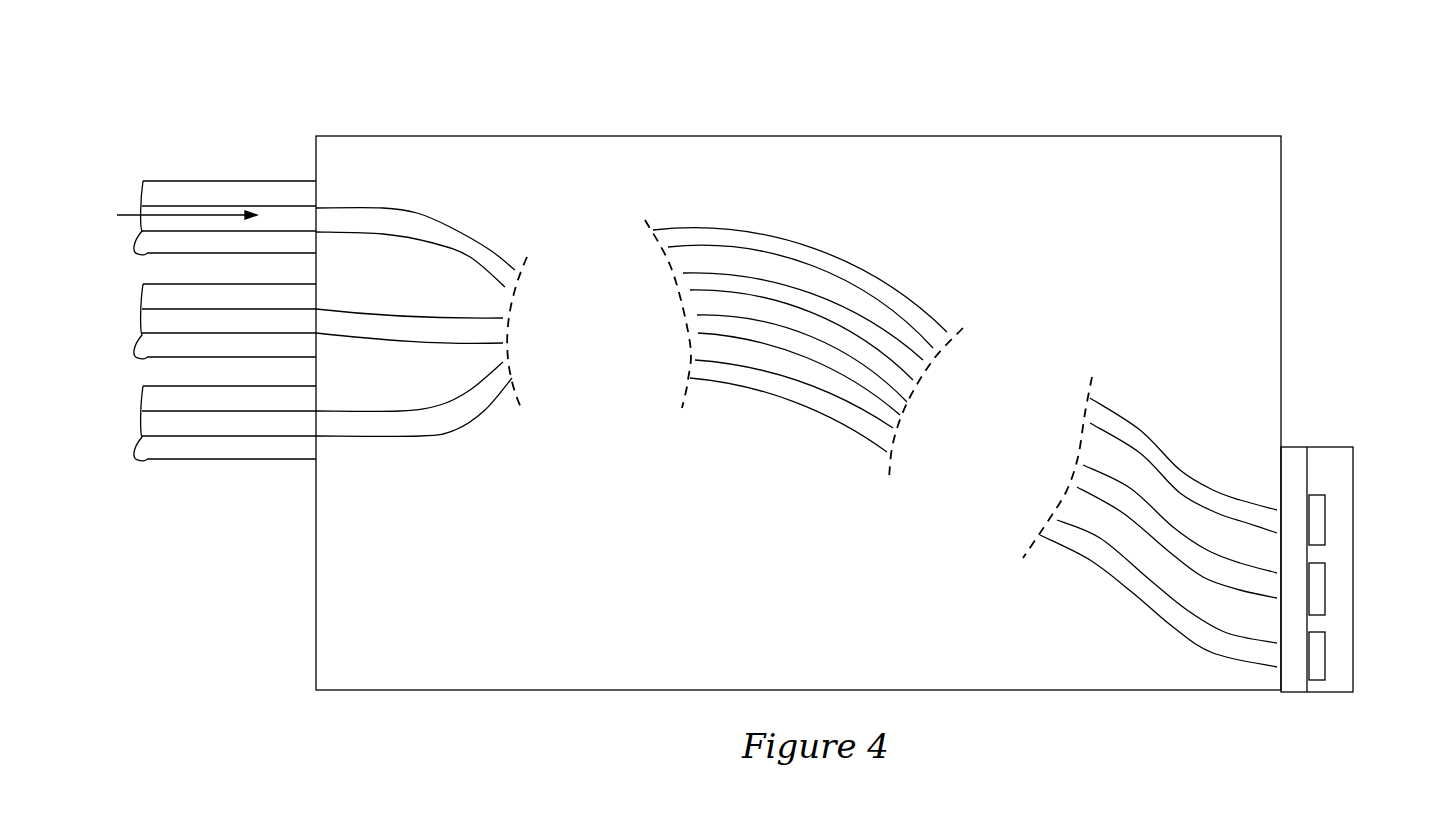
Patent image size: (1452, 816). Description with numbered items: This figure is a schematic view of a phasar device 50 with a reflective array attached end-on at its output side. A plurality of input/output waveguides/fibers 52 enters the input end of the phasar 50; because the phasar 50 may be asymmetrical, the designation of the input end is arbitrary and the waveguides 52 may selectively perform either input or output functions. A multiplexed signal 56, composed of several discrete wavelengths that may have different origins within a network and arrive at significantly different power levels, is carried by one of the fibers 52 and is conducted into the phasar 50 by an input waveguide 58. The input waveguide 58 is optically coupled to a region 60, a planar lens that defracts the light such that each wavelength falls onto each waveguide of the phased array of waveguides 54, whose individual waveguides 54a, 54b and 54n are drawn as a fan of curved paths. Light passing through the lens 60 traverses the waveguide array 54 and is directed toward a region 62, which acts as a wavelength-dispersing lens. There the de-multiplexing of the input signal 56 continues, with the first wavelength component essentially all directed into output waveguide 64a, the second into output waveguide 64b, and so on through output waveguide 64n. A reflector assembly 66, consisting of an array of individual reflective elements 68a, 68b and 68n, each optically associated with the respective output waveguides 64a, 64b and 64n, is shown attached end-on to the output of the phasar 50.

The phasar device 50 is at (1338, 100).
The input/output waveguides/fibers 52 is at (292, 403).
The phased array of waveguides 54 is at (840, 271).
The waveguide of phased array 54a is at (722, 237).
The waveguide of phased array 54b is at (782, 290).
The waveguide of phased array 54n is at (730, 373).
The multiplexed signal 56 is at (133, 213).
The input waveguide 58 is at (427, 222).
The planar lens region 60 is at (598, 240).
The wavelength-dispersing lens region 62 is at (1085, 322).
The output waveguide 64a is at (1123, 433).
The output waveguide 64b is at (1188, 543).
The output waveguide 64n is at (1110, 560).
The reflector assembly 66 is at (1308, 443).
The reflective element 68a is at (1327, 517).
The reflective element 68b is at (1327, 585).
The reflective element 68n is at (1325, 657).